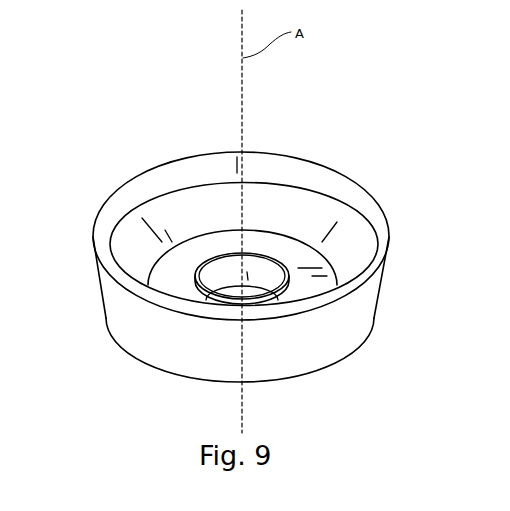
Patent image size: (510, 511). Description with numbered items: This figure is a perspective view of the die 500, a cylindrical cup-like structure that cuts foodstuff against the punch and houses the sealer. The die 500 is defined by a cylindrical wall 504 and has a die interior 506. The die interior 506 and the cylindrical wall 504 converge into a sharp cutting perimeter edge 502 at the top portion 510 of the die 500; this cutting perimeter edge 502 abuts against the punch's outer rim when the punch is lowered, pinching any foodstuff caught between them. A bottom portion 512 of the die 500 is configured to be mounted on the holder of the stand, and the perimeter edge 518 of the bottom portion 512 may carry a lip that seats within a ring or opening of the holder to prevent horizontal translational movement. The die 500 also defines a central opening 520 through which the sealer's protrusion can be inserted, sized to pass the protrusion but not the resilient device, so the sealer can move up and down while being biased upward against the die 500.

The die 500 is at (147, 82).
The cutting perimeter edge 502 is at (288, 156).
The cylindrical wall 504 is at (115, 295).
The die interior 506 is at (312, 218).
The top portion 510 is at (99, 188).
The bottom portion 512 is at (113, 350).
The perimeter edge 518 is at (380, 303).
The central opening 520 is at (233, 268).